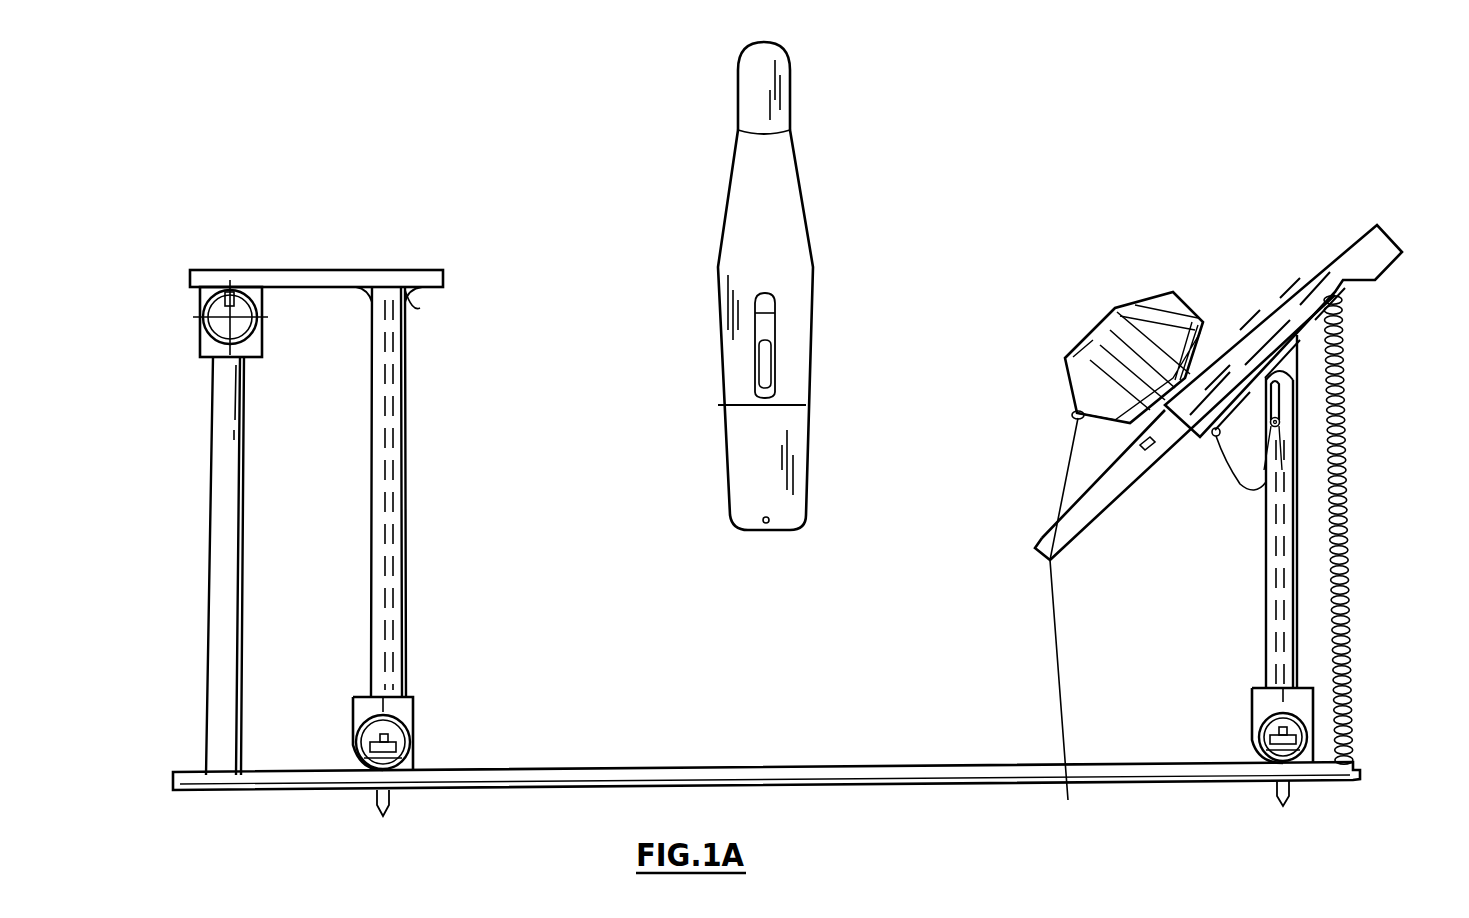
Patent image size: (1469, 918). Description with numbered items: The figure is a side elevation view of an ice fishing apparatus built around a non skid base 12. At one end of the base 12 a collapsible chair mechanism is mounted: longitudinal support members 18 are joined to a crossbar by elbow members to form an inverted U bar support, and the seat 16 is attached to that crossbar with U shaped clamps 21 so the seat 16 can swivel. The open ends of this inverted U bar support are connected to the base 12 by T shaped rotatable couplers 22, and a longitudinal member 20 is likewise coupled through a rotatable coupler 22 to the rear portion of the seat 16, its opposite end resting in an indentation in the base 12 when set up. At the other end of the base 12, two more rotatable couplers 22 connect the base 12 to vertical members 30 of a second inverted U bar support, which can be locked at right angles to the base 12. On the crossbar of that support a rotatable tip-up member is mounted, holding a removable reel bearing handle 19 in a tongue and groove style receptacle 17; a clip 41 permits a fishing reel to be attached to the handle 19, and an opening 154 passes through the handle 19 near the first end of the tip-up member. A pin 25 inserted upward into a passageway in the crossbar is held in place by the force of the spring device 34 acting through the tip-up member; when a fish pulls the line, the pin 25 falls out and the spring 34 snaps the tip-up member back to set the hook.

The non skid base 12 is at (640, 774).
The seat 16 is at (275, 280).
The tongue and groove style receptacle 17 is at (1342, 303).
The longitudinal support members 18 is at (408, 484).
The reel bearing handle 19 is at (737, 230).
The longitudinal member 20 is at (222, 556).
The U shaped clamps 21 is at (410, 306).
The T shaped rotatable couplers 22 is at (207, 352).
The pin 25 is at (1282, 406).
The vertical members 30 is at (1268, 607).
The spring device 34 is at (1355, 572).
The clip 41 is at (768, 300).
The opening 154 is at (1052, 548).